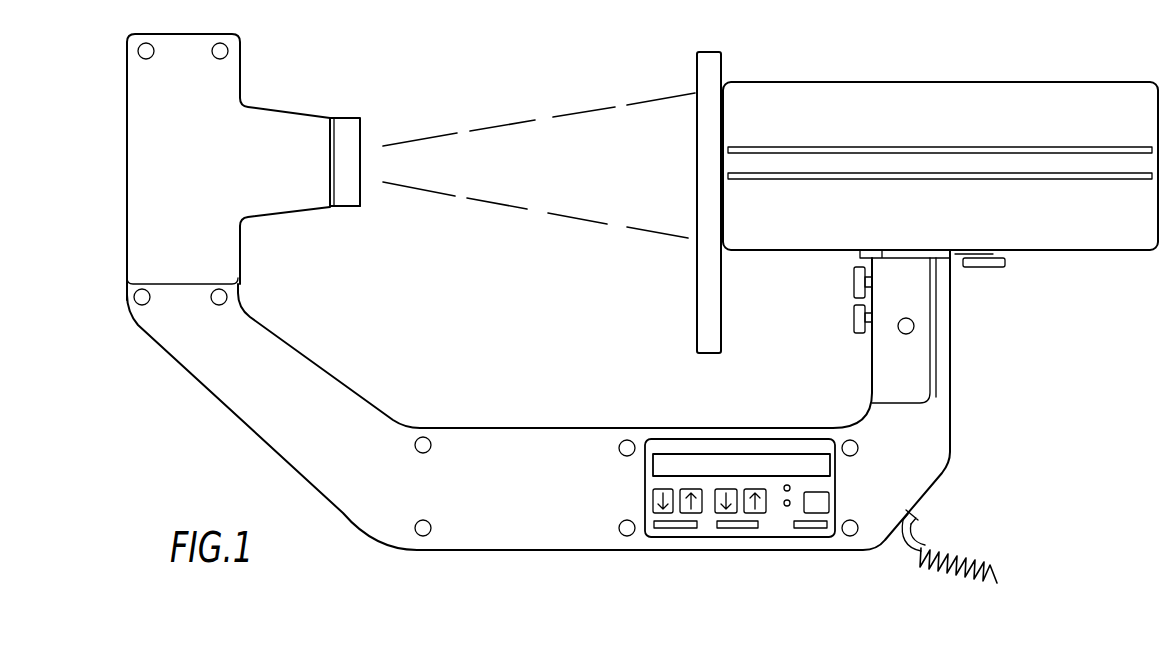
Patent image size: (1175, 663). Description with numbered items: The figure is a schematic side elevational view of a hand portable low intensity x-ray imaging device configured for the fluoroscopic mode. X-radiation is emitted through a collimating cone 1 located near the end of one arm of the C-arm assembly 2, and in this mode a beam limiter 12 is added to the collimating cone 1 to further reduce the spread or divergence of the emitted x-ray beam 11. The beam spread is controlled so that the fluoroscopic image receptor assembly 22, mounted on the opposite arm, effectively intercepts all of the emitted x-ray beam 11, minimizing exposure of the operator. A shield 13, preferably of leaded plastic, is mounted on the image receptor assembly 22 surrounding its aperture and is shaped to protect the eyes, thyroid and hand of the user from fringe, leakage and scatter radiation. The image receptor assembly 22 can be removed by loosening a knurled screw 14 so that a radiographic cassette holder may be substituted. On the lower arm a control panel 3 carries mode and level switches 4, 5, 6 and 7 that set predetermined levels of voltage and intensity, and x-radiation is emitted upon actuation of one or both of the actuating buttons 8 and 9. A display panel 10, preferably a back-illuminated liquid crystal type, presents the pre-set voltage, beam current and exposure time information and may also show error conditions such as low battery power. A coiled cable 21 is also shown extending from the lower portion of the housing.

The collimating cone 1 is at (368, 122).
The C-arm assembly 2 is at (470, 428).
The control panel 3 is at (735, 489).
The mode and level switch 4 is at (655, 513).
The mode and level switch 5 is at (702, 515).
The mode and level switch 6 is at (717, 513).
The mode and level switch 7 is at (763, 513).
The actuating button 8 is at (854, 287).
The actuating button 9 is at (854, 325).
The display panel 10 is at (790, 453).
The x-ray beam 11 is at (534, 148).
The beam limiter 12 is at (347, 205).
The shield 13 is at (713, 63).
The knurled screw 14 is at (990, 268).
The coiled cable 21 is at (968, 550).
The fluoroscopic image receptor assembly 22 is at (952, 82).